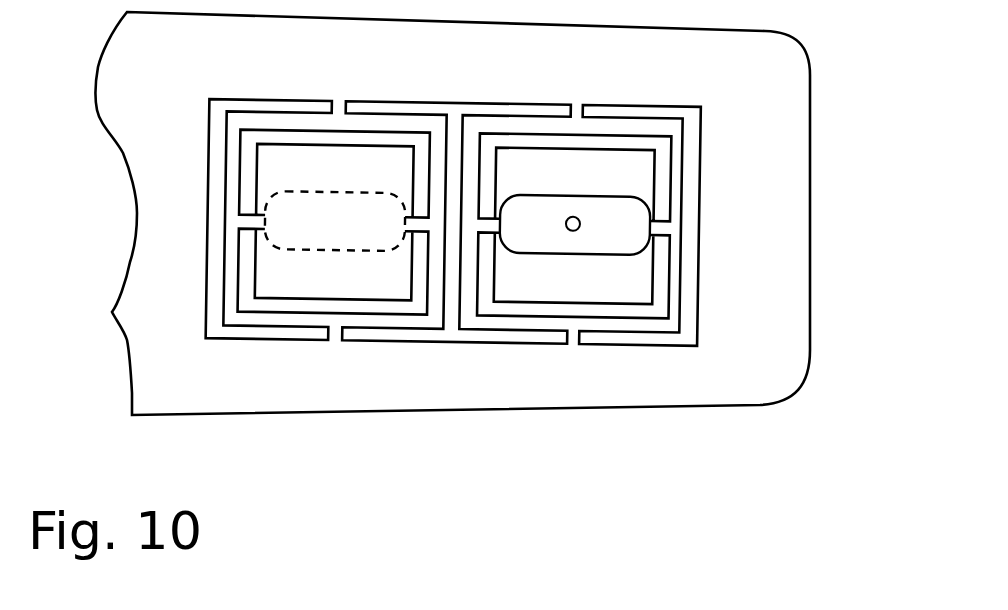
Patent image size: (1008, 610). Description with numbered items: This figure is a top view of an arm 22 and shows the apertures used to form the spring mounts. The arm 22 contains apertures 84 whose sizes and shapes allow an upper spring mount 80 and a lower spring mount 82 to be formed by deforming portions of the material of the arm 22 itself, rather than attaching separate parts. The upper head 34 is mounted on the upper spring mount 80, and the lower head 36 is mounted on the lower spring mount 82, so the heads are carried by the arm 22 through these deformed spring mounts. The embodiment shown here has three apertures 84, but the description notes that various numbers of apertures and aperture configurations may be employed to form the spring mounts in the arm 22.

The arm 22 is at (567, 411).
The upper head 34 is at (312, 298).
The lower head 36 is at (615, 302).
The upper spring mount 80 is at (242, 223).
The lower spring mount 82 is at (628, 220).
The apertures 84 is at (303, 103).